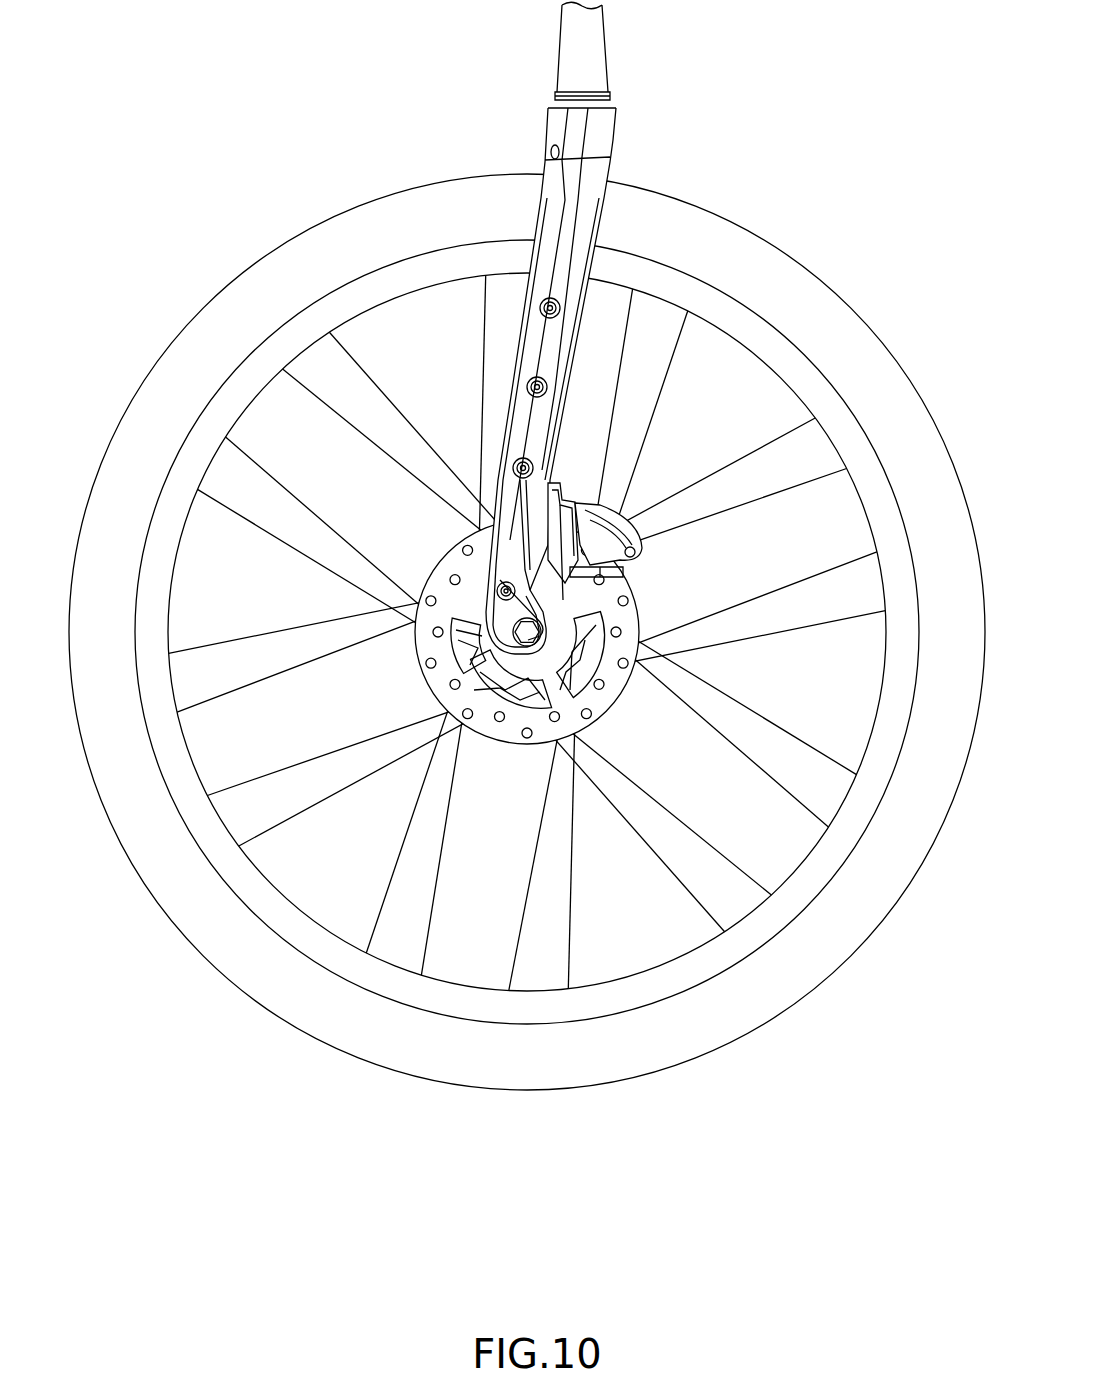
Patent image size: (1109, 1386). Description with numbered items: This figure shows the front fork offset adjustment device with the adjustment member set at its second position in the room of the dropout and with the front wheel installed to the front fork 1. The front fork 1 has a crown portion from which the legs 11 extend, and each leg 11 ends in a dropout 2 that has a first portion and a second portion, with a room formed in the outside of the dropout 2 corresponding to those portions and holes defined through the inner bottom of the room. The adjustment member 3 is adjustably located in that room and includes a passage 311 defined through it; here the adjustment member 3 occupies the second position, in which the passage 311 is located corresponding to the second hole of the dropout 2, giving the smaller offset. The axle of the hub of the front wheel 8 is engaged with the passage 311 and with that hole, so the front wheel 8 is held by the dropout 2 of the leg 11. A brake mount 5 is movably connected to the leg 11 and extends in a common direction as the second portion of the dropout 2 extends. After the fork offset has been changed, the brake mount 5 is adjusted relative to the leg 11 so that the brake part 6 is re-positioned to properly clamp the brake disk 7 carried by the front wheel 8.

The front fork 1 is at (559, 355).
The leg 11 is at (600, 235).
The dropout 2 is at (487, 645).
The adjustment member 3 is at (493, 613).
The passage 311 is at (560, 612).
The brake mount 5 is at (562, 486).
The brake part 6 is at (625, 536).
The brake disk 7 is at (504, 735).
The front wheel 8 is at (690, 1040).